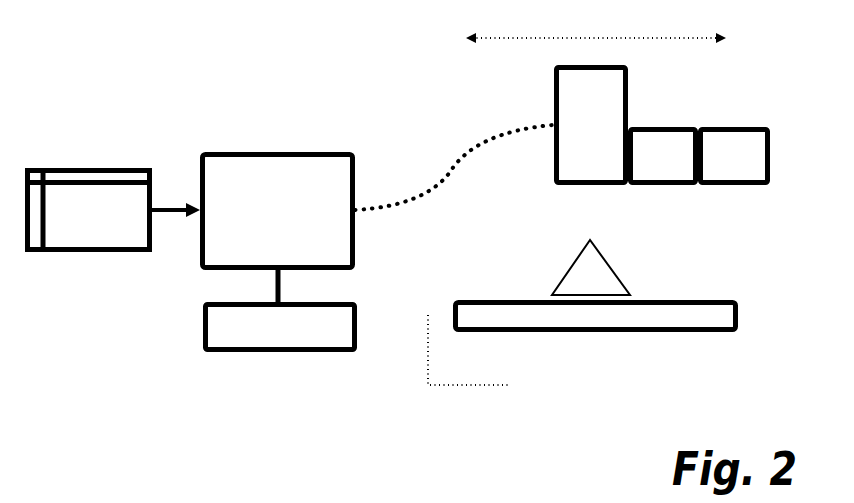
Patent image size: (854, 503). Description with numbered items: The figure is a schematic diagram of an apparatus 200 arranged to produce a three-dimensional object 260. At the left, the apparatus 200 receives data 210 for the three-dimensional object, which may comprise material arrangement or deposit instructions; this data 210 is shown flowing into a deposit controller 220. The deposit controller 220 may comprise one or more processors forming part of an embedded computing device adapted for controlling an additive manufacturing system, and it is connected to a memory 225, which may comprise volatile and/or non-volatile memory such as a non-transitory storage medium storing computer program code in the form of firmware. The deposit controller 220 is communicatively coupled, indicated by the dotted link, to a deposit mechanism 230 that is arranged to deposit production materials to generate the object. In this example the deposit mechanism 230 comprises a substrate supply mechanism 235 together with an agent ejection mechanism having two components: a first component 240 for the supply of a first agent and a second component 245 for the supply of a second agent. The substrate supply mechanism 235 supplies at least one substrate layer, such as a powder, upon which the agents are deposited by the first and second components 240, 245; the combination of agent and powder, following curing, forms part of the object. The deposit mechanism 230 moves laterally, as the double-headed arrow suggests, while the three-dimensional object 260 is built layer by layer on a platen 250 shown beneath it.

The apparatus 200 is at (186, 56).
The data 210 is at (88, 168).
The deposit controller 220 is at (281, 151).
The memory 225 is at (233, 355).
The deposit mechanism 230 is at (775, 62).
The substrate supply mechanism 235 is at (572, 114).
The first component of agent ejection mechanism 240 is at (643, 168).
The second component of agent ejection mechanism 245 is at (712, 168).
The platen 250 is at (723, 300).
The three-dimensional object 260 is at (617, 278).